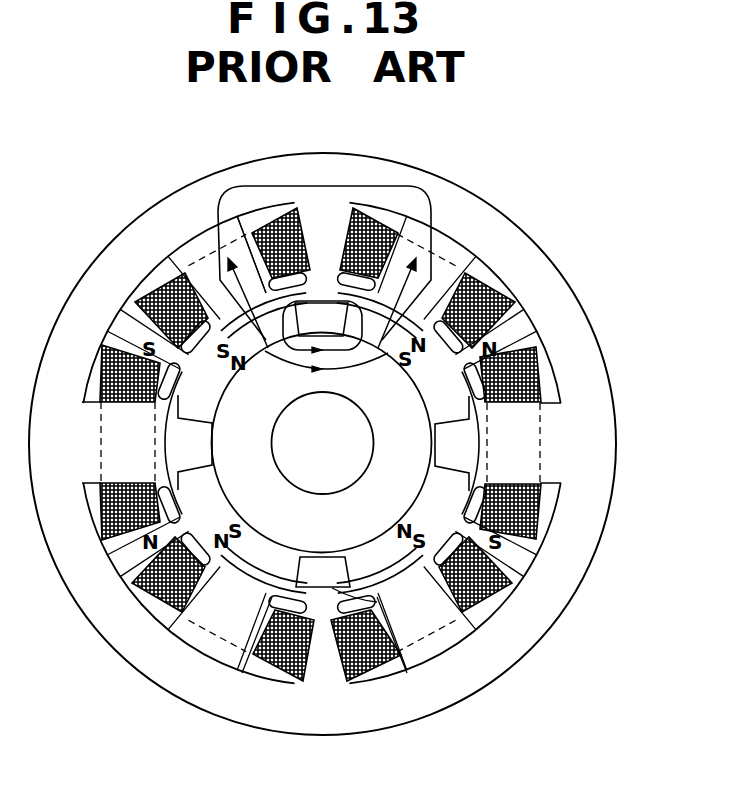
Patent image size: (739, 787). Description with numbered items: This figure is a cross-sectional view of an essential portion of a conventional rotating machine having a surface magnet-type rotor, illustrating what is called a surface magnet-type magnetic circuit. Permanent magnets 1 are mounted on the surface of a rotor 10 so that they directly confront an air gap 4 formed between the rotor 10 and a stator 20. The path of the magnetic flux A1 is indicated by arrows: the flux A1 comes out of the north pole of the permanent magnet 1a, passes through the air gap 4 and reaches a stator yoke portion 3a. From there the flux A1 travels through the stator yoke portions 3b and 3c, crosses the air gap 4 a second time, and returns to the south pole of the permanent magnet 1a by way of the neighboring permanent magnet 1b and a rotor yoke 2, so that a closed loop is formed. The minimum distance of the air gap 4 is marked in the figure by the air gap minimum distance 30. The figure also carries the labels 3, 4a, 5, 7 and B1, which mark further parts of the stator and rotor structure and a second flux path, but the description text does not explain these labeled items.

The permanent magnets 1 is at (372, 560).
The permanent magnet 1a is at (458, 408).
The permanent magnet 1b is at (237, 333).
The rotor yoke 2 is at (418, 443).
The stator yoke 3 is at (497, 214).
The stator yoke portion 3a is at (413, 303).
The stator yoke portion 3b is at (350, 194).
The stator yoke portion 3c is at (235, 303).
The air gap 4 is at (463, 272).
The pole piece 4a is at (324, 303).
The shaft 5 is at (305, 478).
The armature coil 7 is at (497, 281).
The rotor 10 is at (207, 442).
The stator 20 is at (100, 583).
The minimum distance of the air gap 30 is at (302, 562).
The magnetic flux A1 is at (396, 186).
The magnetic flux B1 is at (353, 368).